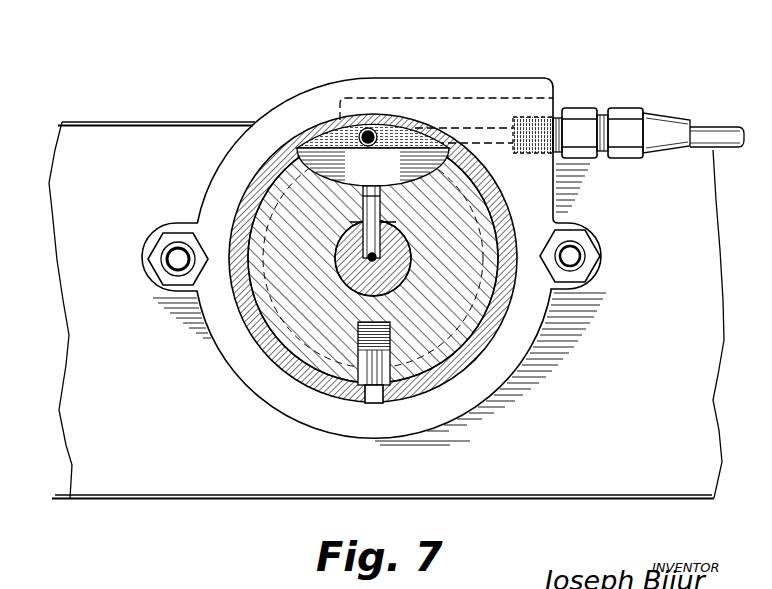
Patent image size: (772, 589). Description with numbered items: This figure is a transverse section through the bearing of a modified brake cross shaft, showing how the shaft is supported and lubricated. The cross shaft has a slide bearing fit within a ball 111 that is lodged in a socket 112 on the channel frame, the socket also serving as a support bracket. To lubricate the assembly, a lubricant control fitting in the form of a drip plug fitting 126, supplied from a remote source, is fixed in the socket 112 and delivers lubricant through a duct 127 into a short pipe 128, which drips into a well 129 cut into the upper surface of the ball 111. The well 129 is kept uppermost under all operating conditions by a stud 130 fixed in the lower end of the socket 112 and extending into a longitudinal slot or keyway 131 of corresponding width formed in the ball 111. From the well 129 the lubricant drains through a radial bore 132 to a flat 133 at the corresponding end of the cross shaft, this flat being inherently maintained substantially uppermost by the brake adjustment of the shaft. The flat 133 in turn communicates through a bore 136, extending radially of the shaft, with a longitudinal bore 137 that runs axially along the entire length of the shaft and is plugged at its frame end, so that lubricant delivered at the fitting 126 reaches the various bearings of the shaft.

The ball 111 is at (305, 334).
The socket 112 is at (473, 86).
The drip plug fitting 126 is at (580, 132).
The duct 127 is at (490, 130).
The short pipe 128 is at (372, 130).
The well 129 is at (384, 163).
The stud 130 is at (508, 367).
The keyway 131 is at (377, 373).
The radial bore 132 is at (376, 201).
The flat 133 is at (373, 203).
The bore 136 is at (380, 233).
The longitudinal bore 137 is at (366, 276).